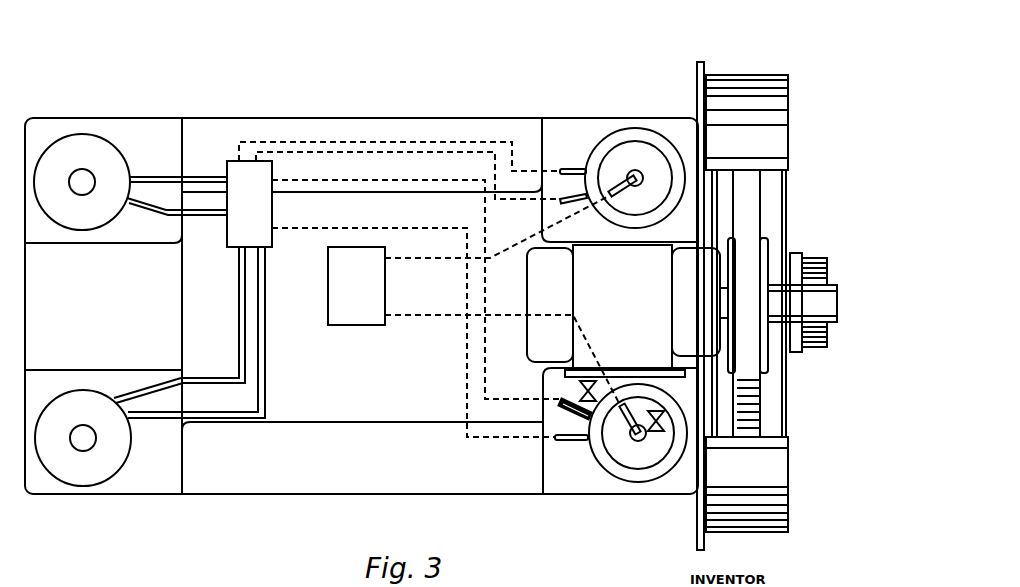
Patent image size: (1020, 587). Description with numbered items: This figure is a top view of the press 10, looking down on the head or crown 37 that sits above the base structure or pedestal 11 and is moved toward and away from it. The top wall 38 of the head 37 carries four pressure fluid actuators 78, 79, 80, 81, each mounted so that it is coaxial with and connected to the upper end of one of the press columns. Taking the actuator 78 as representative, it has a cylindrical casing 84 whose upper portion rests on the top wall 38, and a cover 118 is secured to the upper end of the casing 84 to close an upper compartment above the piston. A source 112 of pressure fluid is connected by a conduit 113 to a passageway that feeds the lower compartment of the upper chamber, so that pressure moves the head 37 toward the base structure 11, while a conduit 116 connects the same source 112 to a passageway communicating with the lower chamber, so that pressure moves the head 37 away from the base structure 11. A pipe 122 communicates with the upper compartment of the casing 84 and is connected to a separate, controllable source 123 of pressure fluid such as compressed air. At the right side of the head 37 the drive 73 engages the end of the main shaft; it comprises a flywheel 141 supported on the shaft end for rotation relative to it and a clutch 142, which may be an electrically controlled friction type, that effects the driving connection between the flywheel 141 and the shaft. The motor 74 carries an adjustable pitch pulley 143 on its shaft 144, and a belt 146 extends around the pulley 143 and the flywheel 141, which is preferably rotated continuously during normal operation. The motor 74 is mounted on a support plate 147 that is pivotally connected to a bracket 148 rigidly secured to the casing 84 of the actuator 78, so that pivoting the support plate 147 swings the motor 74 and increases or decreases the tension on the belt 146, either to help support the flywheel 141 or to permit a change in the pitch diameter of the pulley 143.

The press 10 is at (232, 533).
The base structure or pedestal 11 is at (302, 498).
The head or crown 37 is at (370, 425).
The top wall 38 is at (115, 312).
The drive 73 is at (705, 63).
The motor 74 is at (530, 356).
The pressure fluid actuator 78 is at (593, 468).
The pressure fluid actuator 79 is at (593, 147).
The pressure fluid actuator 80 is at (108, 130).
The pressure fluid actuator 81 is at (107, 490).
The cylindrical casing 84 is at (633, 480).
The source of pressure fluid 112 is at (235, 238).
The conduit 113 is at (557, 443).
The conduit 116 is at (585, 418).
The cover 118 is at (630, 470).
The pipe 122 is at (625, 422).
The source of pressure fluid 123 is at (378, 327).
The flywheel 141 is at (768, 197).
The clutch 142 is at (800, 350).
The adjustable pitch pulley 143 is at (768, 240).
The shaft 144 is at (722, 298).
The belt 146 is at (750, 182).
The support plate 147 is at (660, 412).
The bracket 148 is at (640, 400).